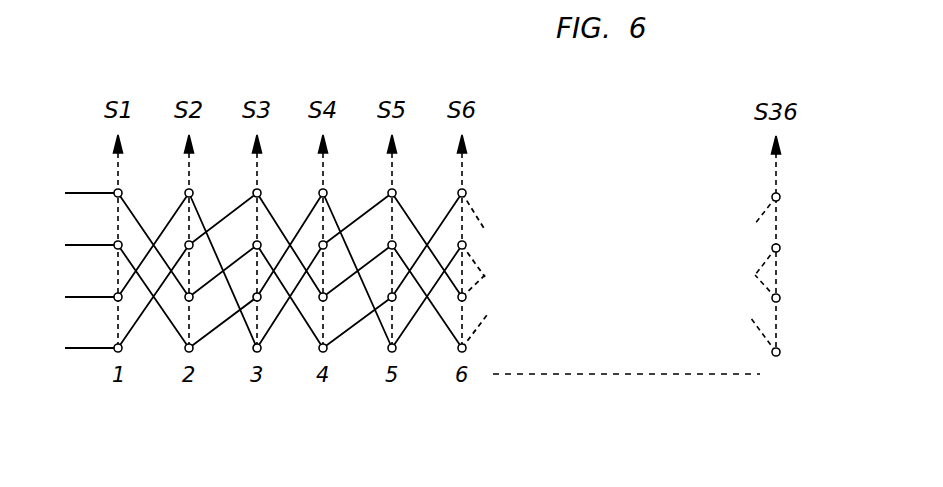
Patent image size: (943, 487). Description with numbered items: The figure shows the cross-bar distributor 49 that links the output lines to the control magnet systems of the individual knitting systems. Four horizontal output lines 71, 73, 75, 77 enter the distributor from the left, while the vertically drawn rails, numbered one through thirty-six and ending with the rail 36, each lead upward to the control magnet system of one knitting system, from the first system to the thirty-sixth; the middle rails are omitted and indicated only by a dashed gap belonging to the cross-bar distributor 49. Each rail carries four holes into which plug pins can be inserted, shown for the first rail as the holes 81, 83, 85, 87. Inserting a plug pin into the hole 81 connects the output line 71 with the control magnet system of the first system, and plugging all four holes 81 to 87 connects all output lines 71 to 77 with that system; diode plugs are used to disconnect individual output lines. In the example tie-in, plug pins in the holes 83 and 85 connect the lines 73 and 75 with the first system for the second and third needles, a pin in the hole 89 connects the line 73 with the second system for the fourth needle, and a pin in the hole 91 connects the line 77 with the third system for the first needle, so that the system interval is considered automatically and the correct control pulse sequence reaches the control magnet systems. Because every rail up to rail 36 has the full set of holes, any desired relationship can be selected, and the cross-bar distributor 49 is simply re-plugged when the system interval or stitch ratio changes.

The output line 71 is at (77, 193).
The output line 73 is at (77, 245).
The output line 75 is at (77, 297).
The output line 77 is at (77, 348).
The hole 81 is at (123, 189).
The hole 83 is at (114, 241).
The hole 85 is at (114, 293).
The hole 87 is at (114, 344).
The hole 89 is at (193, 350).
The hole 91 is at (260, 190).
The cross-bar distributor 49 is at (615, 258).
The rail 36 is at (772, 263).